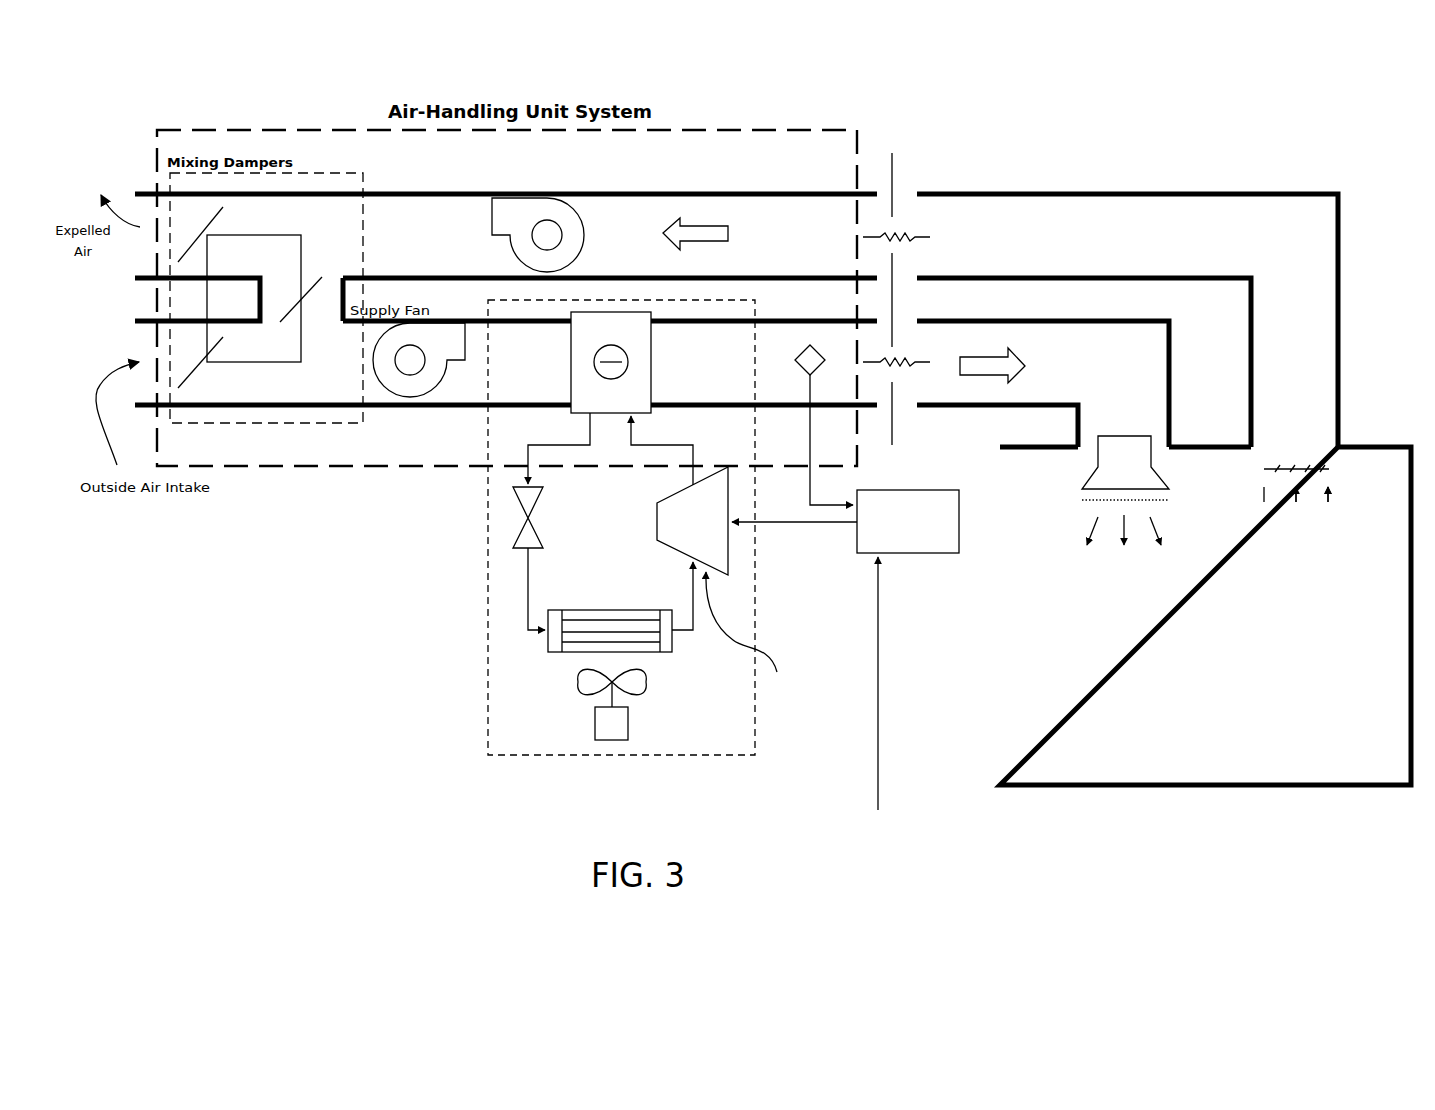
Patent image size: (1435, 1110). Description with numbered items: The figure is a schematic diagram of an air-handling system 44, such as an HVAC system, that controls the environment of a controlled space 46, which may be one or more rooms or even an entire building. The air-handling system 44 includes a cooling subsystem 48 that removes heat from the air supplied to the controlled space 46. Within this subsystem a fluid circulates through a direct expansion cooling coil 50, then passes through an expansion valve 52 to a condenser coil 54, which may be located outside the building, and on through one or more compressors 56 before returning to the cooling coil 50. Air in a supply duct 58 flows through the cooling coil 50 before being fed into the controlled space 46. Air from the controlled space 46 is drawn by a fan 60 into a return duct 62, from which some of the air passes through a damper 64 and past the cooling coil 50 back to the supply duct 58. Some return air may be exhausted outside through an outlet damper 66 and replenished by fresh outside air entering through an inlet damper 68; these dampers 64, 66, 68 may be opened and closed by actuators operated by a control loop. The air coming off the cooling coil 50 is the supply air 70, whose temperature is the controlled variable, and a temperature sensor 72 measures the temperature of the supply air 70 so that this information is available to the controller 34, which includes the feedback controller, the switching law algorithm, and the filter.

The air-handling system 44 is at (924, 113).
The return duct 62 is at (1023, 194).
The supply duct 58 is at (445, 407).
The fan 60 is at (578, 222).
The direct expansion cooling coil 50 is at (571, 365).
The supply air 70 is at (786, 359).
The temperature sensor 72 is at (822, 368).
The controller 34 is at (908, 553).
The controlled space 46 is at (1080, 785).
The cooling subsystem 48 is at (488, 577).
The expansion valve 52 is at (530, 512).
The condenser coil 54 is at (573, 652).
The compressor 56 is at (725, 548).
The damper 64 is at (308, 293).
The outlet damper 66 is at (218, 212).
The inlet damper 68 is at (196, 368).